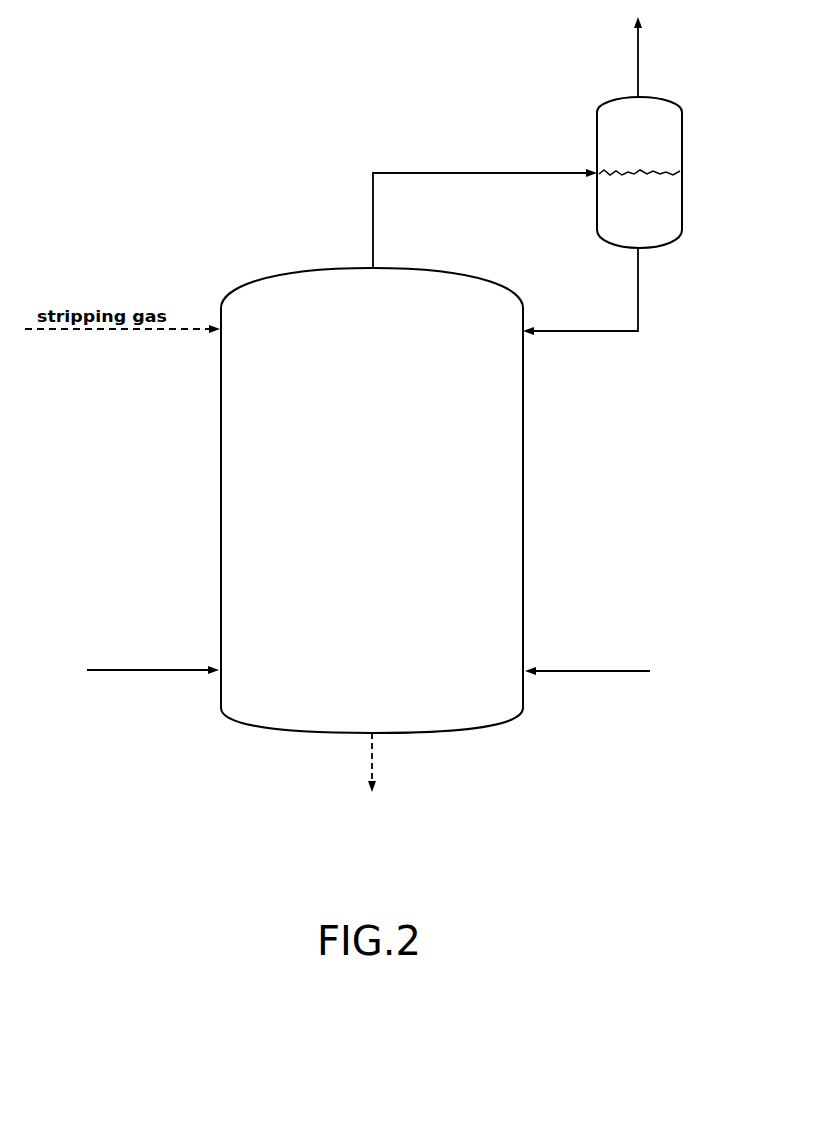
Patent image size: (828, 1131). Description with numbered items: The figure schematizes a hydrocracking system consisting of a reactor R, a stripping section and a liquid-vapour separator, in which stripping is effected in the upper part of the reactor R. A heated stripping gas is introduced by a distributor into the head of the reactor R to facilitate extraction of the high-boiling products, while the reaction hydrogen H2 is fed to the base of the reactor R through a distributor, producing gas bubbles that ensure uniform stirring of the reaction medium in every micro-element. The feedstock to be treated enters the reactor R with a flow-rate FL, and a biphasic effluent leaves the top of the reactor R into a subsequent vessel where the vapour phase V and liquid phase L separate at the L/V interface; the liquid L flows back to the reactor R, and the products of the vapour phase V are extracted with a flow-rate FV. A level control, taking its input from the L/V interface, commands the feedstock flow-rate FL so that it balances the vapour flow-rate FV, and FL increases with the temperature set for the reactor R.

The reactor R is at (372, 530).
The vapour phase V is at (639, 94).
The liquid phase L is at (602, 252).
The flow-rate of the products extracted from the vapour phase FV is at (665, 58).
The flow-rate of the feedstock to be treated FL is at (153, 655).
The reaction hydrogen H2 is at (587, 658).